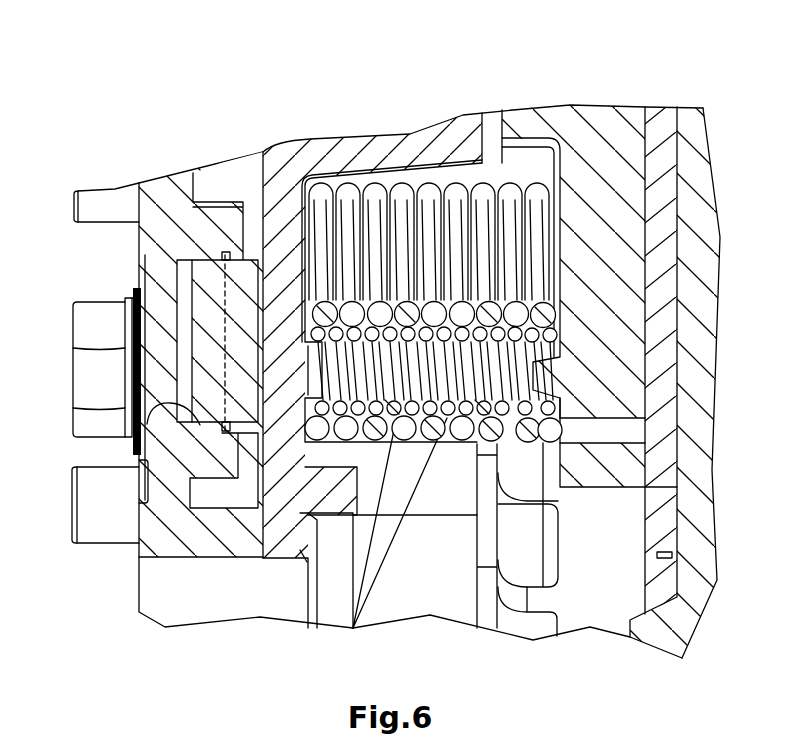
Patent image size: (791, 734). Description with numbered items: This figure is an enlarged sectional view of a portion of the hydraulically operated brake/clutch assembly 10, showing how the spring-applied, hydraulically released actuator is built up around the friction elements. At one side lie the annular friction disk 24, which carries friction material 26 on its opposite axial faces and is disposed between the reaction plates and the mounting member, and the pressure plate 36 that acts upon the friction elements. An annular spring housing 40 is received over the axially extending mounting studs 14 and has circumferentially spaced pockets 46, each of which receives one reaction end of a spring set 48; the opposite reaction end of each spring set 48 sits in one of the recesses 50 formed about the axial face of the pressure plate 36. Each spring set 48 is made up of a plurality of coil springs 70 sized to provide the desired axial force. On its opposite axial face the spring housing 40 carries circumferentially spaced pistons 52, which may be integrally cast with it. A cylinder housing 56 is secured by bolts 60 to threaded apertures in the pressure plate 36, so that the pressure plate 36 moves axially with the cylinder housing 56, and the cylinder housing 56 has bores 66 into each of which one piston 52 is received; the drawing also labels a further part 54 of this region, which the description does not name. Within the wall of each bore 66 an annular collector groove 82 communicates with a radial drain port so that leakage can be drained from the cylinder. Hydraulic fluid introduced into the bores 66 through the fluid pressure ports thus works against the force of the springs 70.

The hydraulically operated brake/clutch assembly 10 is at (228, 104).
The mounting studs 14 is at (97, 207).
The friction disk 24 is at (688, 116).
The friction material 26 is at (653, 432).
The pressure plate 36 is at (601, 128).
The spring housing 40 is at (283, 468).
The pockets 46 is at (328, 188).
The spring set 48 is at (444, 228).
The recesses 50 is at (561, 183).
The pistons 52 is at (197, 347).
The plate 54 is at (200, 425).
The cylinder housing 56 is at (172, 186).
The bolts 60 is at (95, 320).
The cylinder bores 66 is at (175, 408).
The coil springs 70 is at (413, 200).
The annular collector groove 82 is at (225, 385).